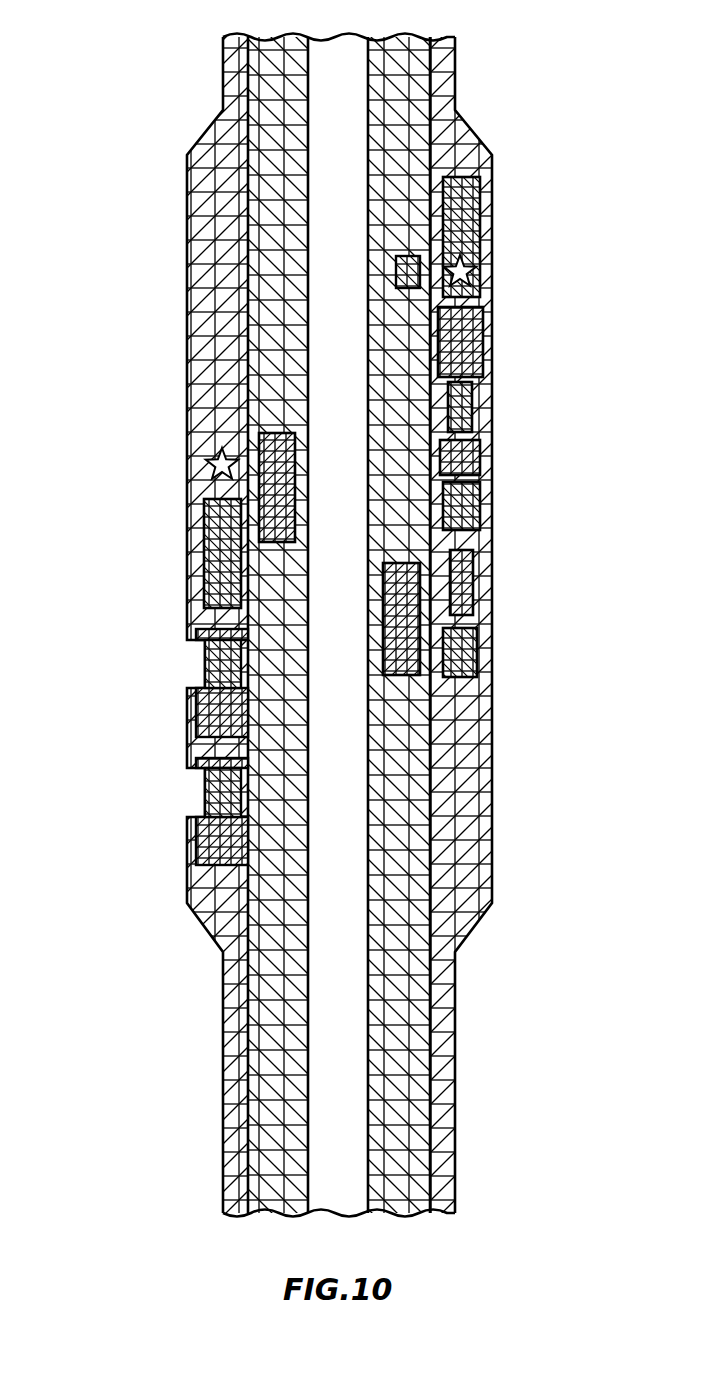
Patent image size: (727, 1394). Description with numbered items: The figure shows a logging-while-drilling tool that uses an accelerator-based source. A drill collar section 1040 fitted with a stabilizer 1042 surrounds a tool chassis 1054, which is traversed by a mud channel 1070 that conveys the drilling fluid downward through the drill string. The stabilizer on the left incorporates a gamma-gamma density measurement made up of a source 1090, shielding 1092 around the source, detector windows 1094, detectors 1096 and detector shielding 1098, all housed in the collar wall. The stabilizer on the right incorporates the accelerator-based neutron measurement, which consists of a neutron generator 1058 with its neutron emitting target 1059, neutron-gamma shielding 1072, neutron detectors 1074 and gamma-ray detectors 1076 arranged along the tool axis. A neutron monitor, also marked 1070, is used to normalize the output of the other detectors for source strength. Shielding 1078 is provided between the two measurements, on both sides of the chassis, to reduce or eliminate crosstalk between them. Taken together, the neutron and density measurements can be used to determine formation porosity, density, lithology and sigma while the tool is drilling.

The drill collar section 1040 is at (233, 73).
The stabilizer 1042 is at (205, 176).
The tool chassis 1054 is at (417, 70).
The neutron generator 1058 is at (467, 200).
The neutron emitting target 1059 is at (470, 268).
The mud channel 1070 is at (348, 96).
The neutron-gamma shielding 1072 is at (480, 360).
The neutron detectors 1074 is at (472, 403).
The gamma-ray detectors 1076 is at (472, 512).
The shielding 1078 is at (403, 672).
The source 1090 is at (208, 462).
The shielding 1092 is at (215, 548).
The detector windows 1094 is at (196, 650).
The detectors 1096 is at (216, 670).
The detector shielding 1098 is at (205, 707).